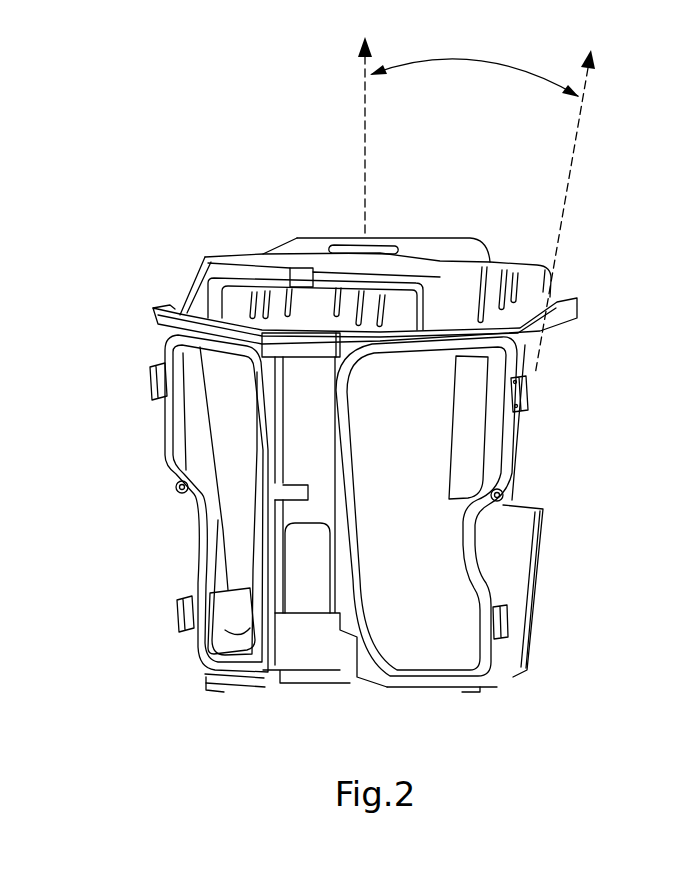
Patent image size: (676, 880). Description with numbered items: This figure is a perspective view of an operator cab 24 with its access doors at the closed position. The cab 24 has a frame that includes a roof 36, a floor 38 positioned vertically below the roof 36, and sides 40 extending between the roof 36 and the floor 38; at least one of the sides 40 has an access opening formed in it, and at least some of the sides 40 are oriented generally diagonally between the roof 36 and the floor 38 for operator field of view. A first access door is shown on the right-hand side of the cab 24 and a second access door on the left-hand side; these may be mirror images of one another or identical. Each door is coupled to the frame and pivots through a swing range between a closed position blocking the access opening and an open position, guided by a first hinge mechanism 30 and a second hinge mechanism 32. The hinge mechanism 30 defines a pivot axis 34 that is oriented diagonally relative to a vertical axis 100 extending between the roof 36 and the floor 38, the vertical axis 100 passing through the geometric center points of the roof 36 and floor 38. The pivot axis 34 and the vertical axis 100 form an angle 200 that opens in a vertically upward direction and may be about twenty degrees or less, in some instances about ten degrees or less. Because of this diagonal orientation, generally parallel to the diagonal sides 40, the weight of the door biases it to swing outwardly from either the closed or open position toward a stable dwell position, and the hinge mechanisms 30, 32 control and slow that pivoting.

The vertical axis 100 is at (364, 113).
The pivot axis 34 is at (574, 135).
The angle 200 is at (474, 78).
The cab 24 is at (603, 247).
The roof 36 is at (210, 256).
The first hinge mechanism 30 is at (529, 398).
The second hinge mechanism 32 is at (509, 621).
The floor 38 is at (258, 681).
The sides 40 is at (208, 686).